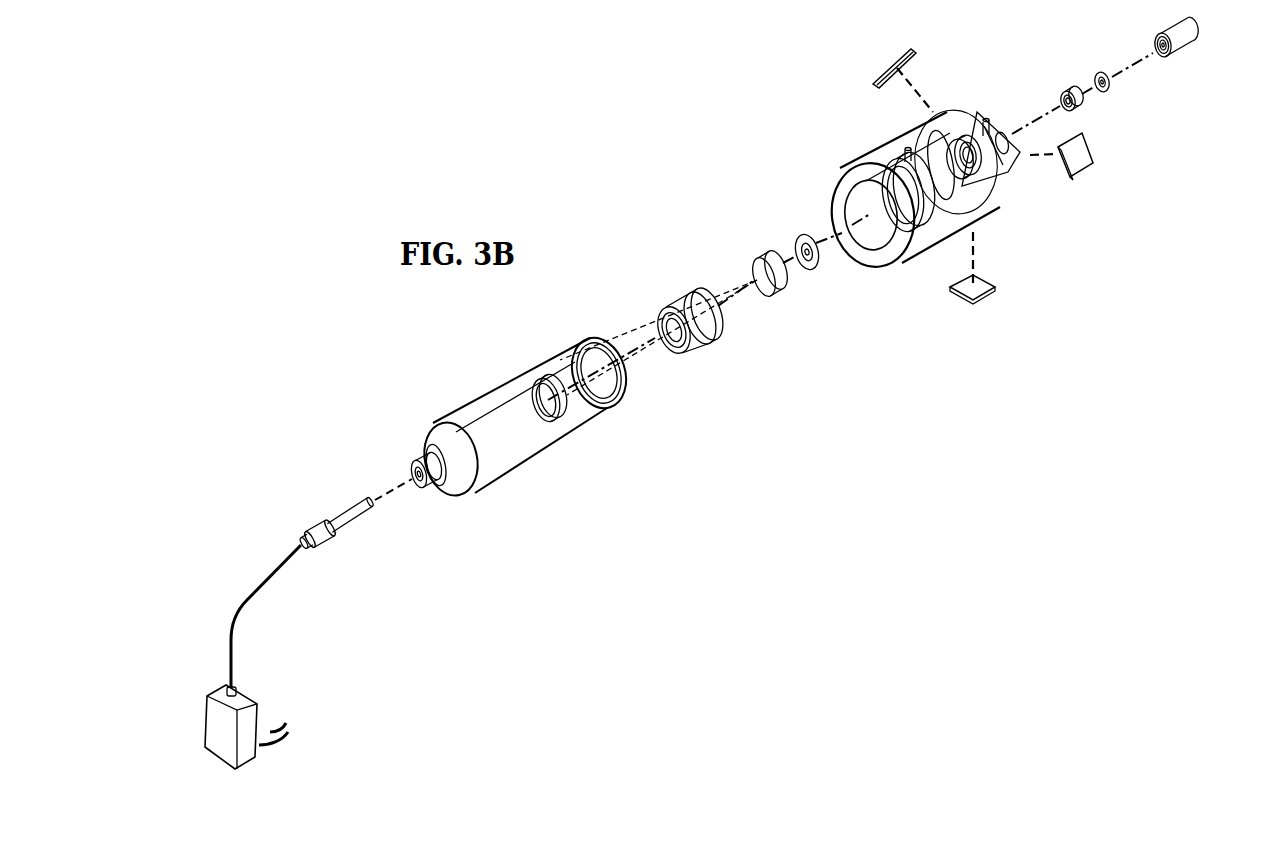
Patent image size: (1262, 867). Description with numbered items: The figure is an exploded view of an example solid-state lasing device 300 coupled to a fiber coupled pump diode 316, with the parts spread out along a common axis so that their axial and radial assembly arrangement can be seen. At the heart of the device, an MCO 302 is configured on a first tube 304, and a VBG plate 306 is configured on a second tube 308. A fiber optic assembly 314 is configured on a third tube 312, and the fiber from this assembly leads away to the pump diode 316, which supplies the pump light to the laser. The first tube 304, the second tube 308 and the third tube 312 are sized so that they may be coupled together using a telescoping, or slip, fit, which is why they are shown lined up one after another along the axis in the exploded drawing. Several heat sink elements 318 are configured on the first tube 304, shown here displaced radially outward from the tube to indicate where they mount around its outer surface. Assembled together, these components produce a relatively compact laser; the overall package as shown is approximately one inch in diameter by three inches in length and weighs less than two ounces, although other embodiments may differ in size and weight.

The solid-state lasing device 300 is at (664, 209).
The MCO 302 is at (768, 259).
The first tube 304 is at (890, 143).
The VBG plate 306 is at (1064, 89).
The second tube 308 is at (1184, 42).
The third tube 312 is at (510, 379).
The fiber optic assembly 314 is at (346, 505).
The pump diode 316 is at (259, 721).
The heat sink elements 318 is at (880, 64).